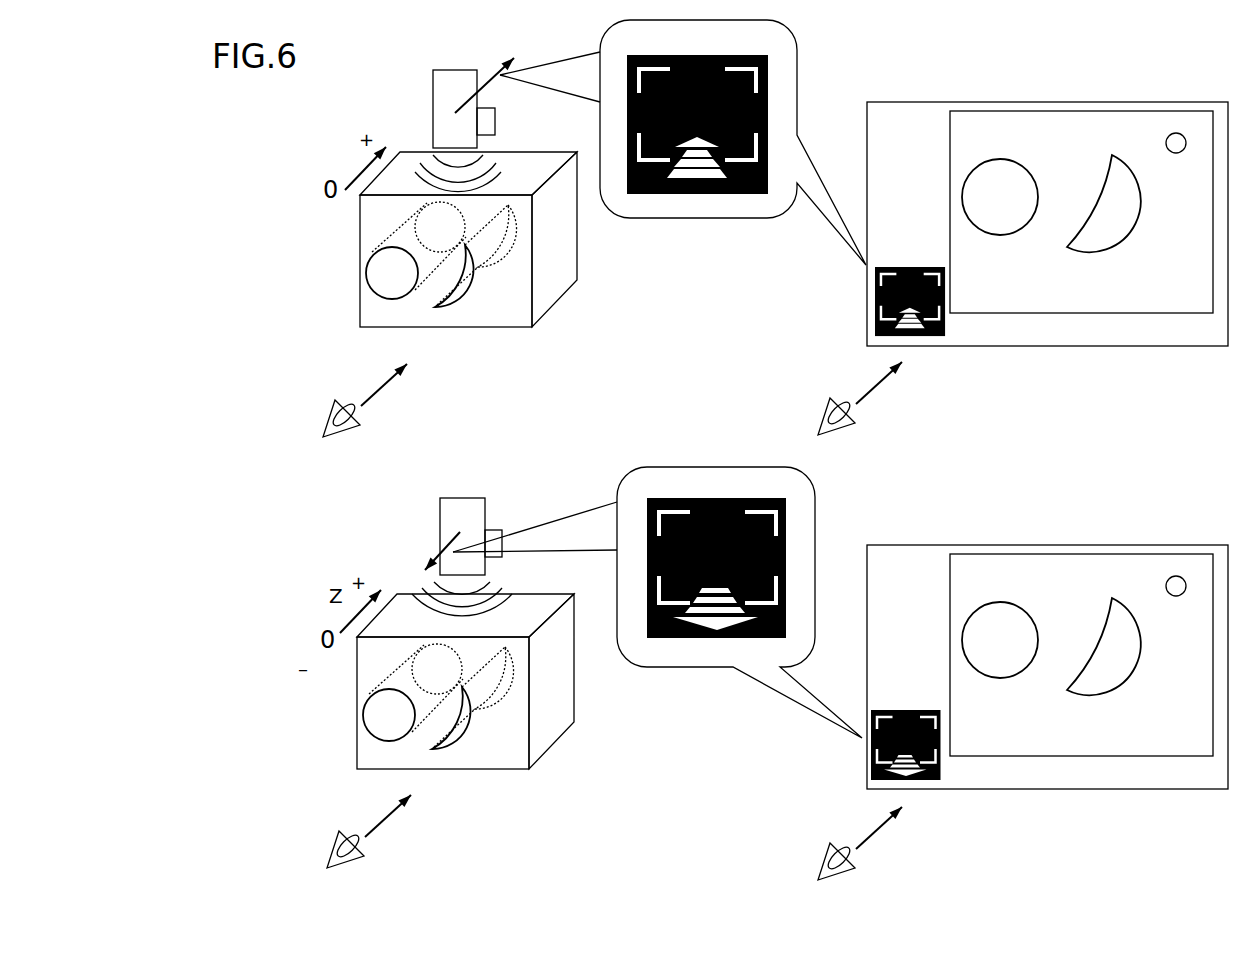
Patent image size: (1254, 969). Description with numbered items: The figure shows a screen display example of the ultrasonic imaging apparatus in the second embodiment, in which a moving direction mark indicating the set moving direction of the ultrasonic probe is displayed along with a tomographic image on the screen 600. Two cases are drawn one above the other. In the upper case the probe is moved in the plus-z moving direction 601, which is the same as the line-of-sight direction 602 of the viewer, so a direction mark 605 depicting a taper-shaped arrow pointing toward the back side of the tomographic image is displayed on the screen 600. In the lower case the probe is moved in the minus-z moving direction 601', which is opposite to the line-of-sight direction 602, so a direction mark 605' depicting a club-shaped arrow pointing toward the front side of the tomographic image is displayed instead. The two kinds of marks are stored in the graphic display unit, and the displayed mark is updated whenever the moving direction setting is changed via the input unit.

The screen 600 is at (1088, 102).
The moving direction 601 is at (464, 100).
The moving direction 601' is at (430, 557).
The line-of-sight direction 602 is at (380, 385).
The direction mark 605 is at (722, 171).
The direction mark 605' is at (697, 623).